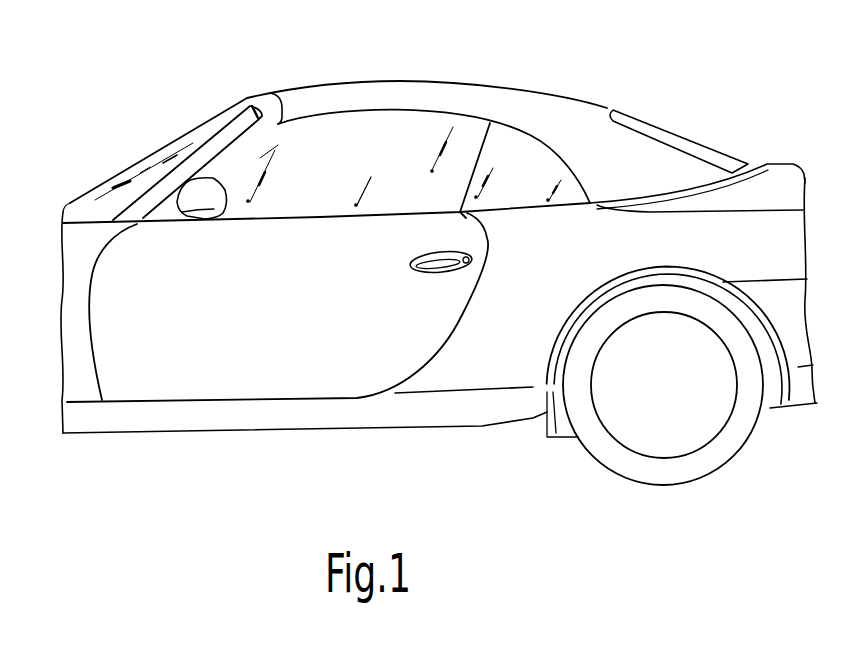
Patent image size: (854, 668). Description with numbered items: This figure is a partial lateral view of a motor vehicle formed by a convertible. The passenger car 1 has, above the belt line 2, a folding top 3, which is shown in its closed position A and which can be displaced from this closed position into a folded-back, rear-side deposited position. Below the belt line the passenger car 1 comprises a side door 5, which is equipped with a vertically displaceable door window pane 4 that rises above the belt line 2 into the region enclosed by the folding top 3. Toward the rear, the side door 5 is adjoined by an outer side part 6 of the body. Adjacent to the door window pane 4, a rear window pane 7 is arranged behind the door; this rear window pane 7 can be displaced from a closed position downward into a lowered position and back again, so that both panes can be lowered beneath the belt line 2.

The passenger car 1 is at (240, 88).
The belt line 2 is at (336, 226).
The folding top 3 is at (468, 86).
The door window pane 4 is at (380, 127).
The side door 5 is at (238, 372).
The outer side part 6 is at (507, 323).
The rear window pane 7 is at (521, 153).
The closed position A is at (322, 80).